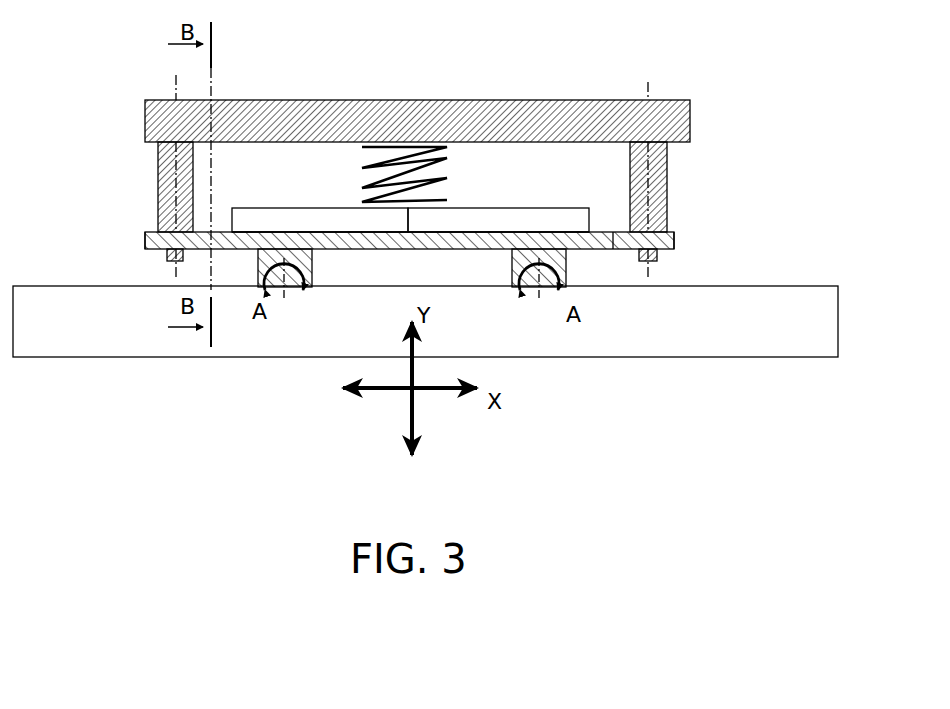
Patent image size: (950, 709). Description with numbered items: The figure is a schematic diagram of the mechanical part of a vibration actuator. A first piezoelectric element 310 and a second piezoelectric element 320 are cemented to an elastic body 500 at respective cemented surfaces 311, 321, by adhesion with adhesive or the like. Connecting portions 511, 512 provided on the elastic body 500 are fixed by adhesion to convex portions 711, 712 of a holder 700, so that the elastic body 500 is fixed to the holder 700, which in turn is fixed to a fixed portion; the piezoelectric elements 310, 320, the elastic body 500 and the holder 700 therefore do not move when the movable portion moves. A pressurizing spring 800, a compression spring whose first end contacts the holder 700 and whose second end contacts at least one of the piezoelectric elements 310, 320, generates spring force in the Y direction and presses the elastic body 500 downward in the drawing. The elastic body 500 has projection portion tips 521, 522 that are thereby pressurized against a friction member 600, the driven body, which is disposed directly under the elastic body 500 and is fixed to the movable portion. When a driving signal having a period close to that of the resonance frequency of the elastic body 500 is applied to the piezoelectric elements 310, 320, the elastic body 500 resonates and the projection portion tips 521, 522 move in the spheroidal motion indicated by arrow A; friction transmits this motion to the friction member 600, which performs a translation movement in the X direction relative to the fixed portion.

The holder 700 is at (690, 113).
The convex portion 711 is at (170, 263).
The convex portion 712 is at (652, 263).
The elastic body 500 is at (345, 250).
The connecting portion 511 is at (143, 233).
The connecting portion 512 is at (675, 240).
The first piezoelectric element 310 is at (332, 208).
The cemented surface 311 is at (300, 232).
The second piezoelectric element 320 is at (513, 208).
The cemented surface 321 is at (528, 232).
The pressurizing spring 800 is at (460, 178).
The projection portion tip 521 is at (276, 298).
The projection portion tip 522 is at (546, 300).
The friction member 600 is at (733, 287).